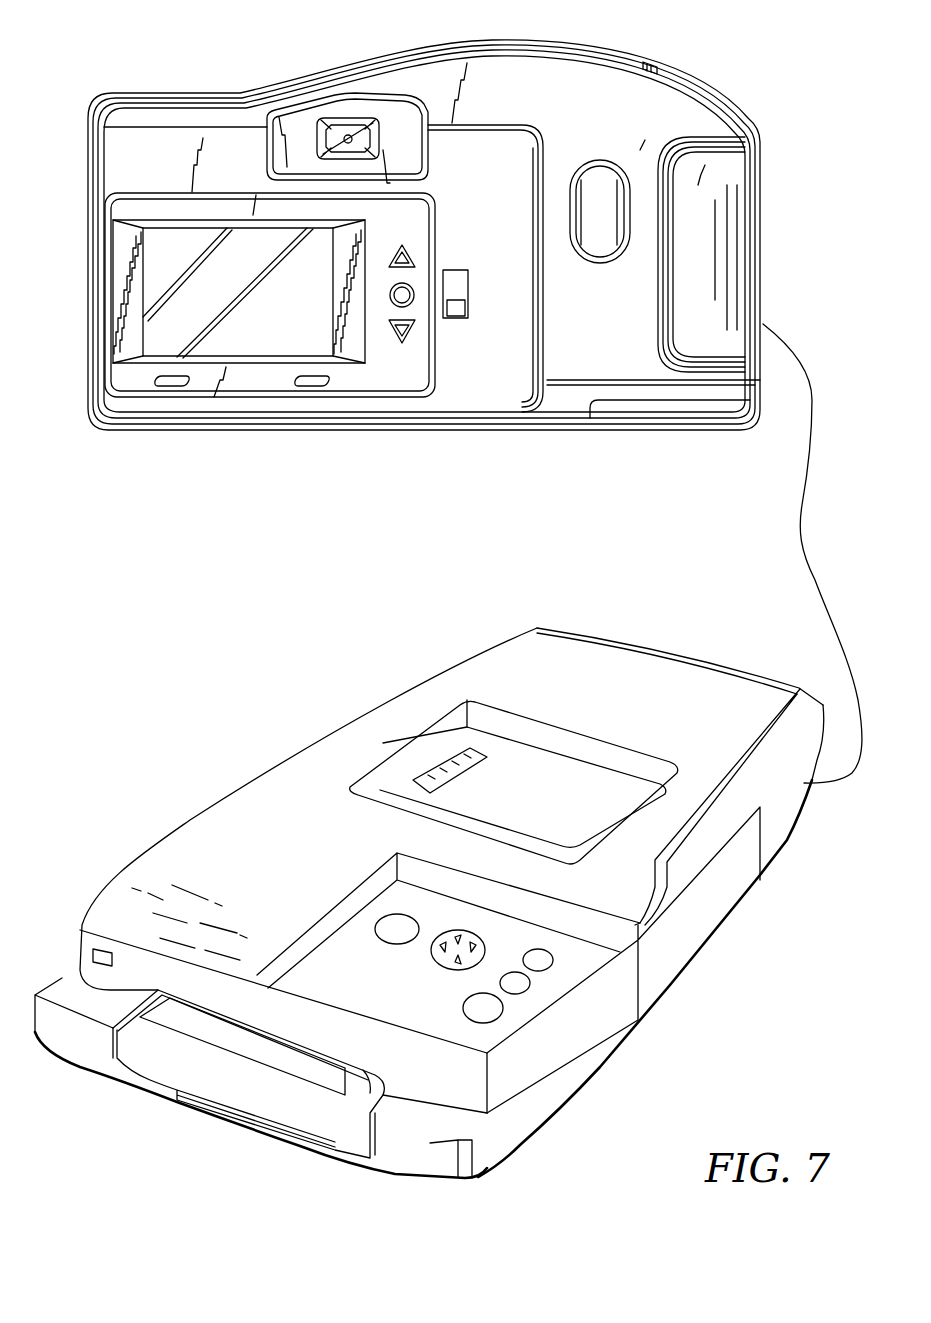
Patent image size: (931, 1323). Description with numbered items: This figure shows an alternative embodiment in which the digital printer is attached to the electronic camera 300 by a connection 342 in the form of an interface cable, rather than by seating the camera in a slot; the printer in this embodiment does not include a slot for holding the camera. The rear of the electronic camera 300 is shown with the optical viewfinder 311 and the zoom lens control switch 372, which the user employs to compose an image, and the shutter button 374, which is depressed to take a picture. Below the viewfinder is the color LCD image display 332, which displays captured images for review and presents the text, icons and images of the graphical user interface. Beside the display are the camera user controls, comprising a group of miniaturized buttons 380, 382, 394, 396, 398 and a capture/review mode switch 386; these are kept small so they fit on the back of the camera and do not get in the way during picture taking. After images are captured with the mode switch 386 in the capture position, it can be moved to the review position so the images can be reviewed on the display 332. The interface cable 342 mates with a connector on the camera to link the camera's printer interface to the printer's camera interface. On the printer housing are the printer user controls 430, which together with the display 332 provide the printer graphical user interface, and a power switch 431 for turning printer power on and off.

The electronic camera 300 is at (437, 240).
The optical viewfinder 311 is at (343, 132).
The color LCD image display 332 is at (175, 268).
The connection (interface cable) 342 is at (799, 541).
The zoom lens control switch 372 is at (600, 185).
The shutter button 374 is at (620, 66).
The miniaturized button 380 is at (175, 390).
The miniaturized button 382 is at (318, 390).
The capture/review mode switch 386 is at (468, 279).
The miniaturized button 394 is at (408, 255).
The miniaturized button 396 is at (389, 295).
The miniaturized button 398 is at (408, 333).
The printer user controls 430 is at (462, 1025).
The power switch 431 is at (95, 957).